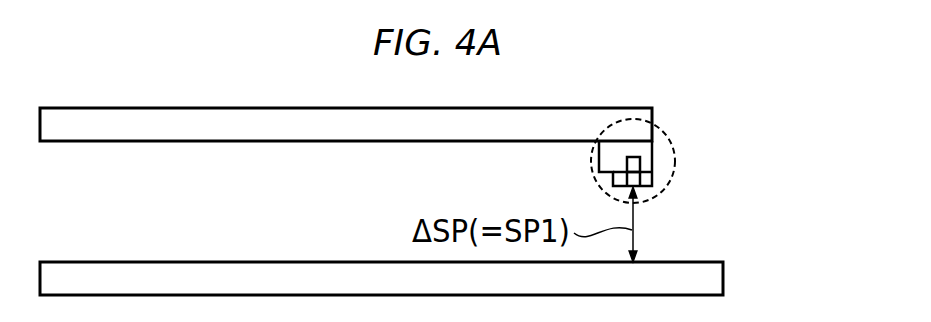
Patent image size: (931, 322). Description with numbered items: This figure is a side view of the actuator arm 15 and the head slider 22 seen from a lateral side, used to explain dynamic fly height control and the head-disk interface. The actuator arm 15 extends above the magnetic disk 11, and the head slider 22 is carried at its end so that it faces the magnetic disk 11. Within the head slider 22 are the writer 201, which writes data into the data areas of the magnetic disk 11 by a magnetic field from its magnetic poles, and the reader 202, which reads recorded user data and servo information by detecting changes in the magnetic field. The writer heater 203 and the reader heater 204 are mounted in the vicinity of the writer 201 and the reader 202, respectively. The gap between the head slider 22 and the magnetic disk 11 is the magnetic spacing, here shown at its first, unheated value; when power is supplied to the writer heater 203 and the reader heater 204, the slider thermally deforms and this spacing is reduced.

The actuator arm 15 is at (166, 90).
The magnetic disk 11 is at (166, 246).
The head slider 22 is at (660, 129).
The writer heater 203 is at (710, 162).
The reader heater 204 is at (641, 161).
The writer 201 is at (717, 194).
The reader 202 is at (652, 179).